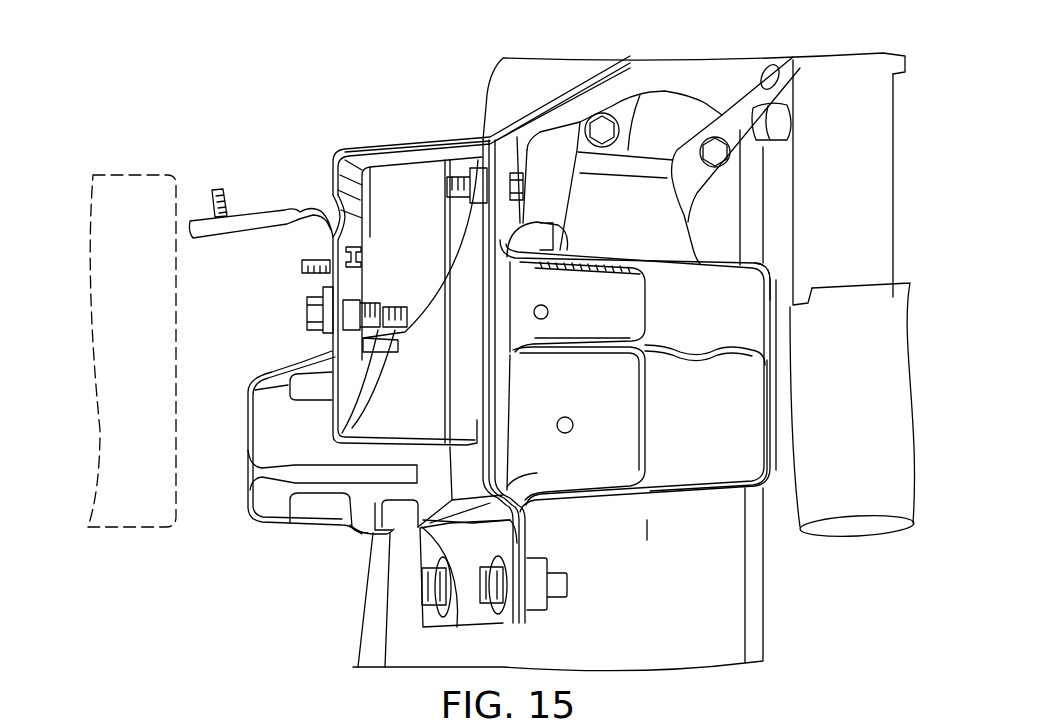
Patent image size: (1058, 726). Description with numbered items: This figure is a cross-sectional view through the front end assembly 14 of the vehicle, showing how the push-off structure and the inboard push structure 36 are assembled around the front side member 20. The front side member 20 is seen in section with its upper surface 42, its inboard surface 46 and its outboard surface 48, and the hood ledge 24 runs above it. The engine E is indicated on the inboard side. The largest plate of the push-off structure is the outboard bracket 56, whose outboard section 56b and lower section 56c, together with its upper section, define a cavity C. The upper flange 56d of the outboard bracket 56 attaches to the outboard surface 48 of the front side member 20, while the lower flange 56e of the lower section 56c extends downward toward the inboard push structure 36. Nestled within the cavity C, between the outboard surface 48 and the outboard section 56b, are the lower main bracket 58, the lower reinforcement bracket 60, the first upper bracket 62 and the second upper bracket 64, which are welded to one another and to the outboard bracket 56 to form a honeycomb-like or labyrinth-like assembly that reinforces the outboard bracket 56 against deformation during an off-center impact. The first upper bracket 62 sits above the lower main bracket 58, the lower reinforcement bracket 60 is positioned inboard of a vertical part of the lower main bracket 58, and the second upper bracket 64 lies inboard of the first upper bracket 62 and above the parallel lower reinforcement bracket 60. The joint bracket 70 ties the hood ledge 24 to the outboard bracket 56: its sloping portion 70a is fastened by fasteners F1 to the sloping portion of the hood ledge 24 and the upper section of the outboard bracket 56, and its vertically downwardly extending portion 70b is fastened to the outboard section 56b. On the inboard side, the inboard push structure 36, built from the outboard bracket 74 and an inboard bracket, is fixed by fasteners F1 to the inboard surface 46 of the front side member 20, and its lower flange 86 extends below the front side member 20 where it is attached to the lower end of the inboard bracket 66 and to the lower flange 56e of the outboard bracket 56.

The vehicle front end assembly 14 is at (826, 37).
The first front side member 20 is at (385, 141).
The first hood ledge 24 is at (707, 76).
The inboard push structure 36 is at (245, 432).
The upper surface 42 is at (437, 134).
The inboard surface 46 is at (333, 183).
The outboard surface 48 is at (485, 386).
The outboard bracket 56 is at (777, 410).
The outboard section 56b is at (773, 352).
The lower section 56c is at (641, 494).
The upper flange 56d is at (533, 210).
The lower flange 56e is at (530, 537).
The lower main bracket 58 is at (762, 424).
The lower reinforcement bracket 60 is at (650, 437).
The first upper bracket 62 is at (755, 288).
The second upper bracket 64 is at (647, 303).
The inboard bracket 66 is at (502, 489).
The joint bracket 70 is at (662, 118).
The sloping portion 70a is at (633, 108).
The vertically downwardly extending portion 70b is at (700, 190).
The outboard bracket 74 is at (283, 522).
The lower flange 86 is at (484, 617).
The cavity C is at (727, 457).
The engine E is at (133, 175).
The fasteners F1 is at (305, 308).